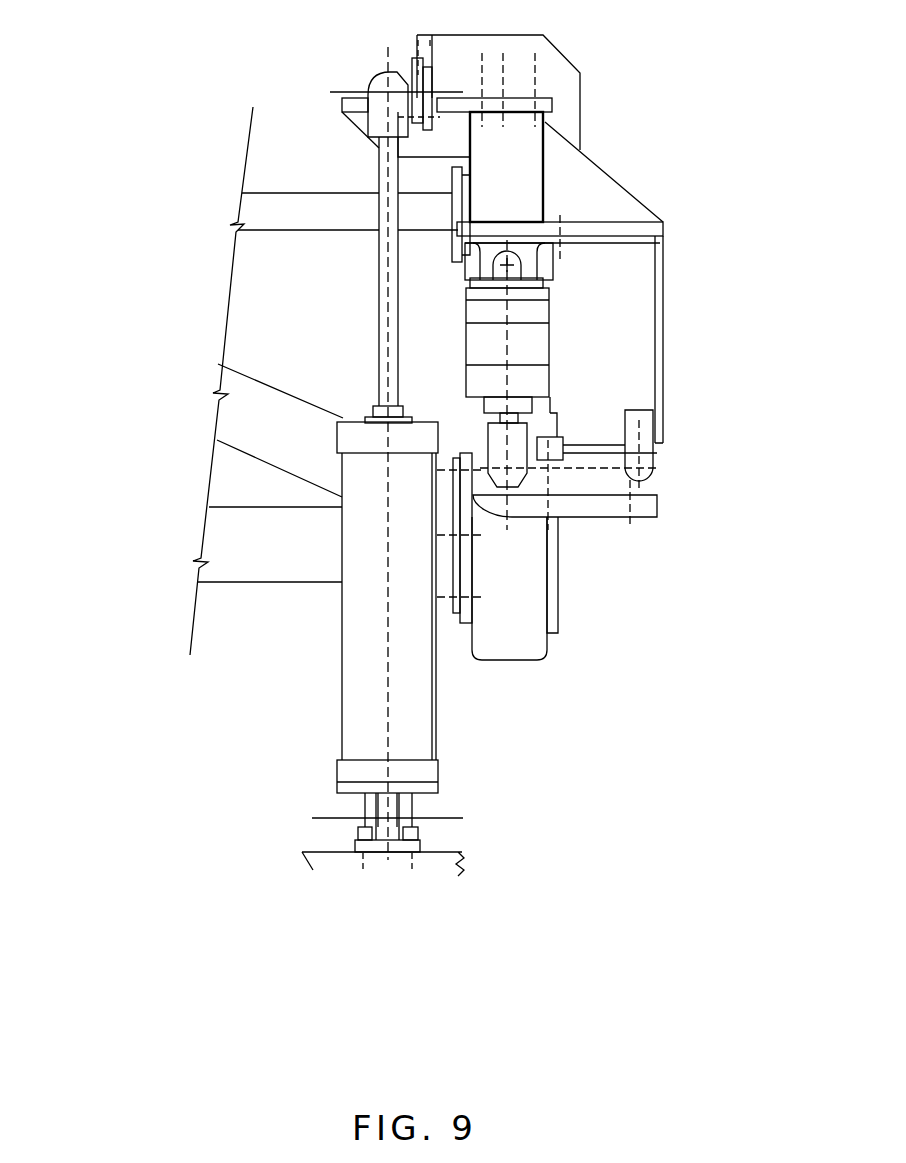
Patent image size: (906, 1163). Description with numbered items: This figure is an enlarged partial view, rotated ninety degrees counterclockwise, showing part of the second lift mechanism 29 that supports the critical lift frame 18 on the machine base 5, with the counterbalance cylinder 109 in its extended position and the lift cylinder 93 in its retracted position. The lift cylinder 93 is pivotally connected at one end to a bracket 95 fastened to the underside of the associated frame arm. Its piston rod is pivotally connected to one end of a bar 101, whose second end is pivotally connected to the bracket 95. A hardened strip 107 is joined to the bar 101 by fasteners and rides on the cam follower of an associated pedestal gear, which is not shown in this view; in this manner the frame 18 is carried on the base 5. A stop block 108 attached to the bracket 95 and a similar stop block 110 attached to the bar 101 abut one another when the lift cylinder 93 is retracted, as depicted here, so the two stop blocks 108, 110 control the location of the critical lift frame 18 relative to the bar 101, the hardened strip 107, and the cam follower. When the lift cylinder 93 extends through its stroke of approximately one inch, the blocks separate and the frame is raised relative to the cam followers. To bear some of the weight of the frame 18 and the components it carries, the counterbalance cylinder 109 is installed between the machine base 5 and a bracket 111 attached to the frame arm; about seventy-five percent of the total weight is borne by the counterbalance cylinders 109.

The bracket 111 is at (587, 197).
The critical lift frame 18 is at (668, 267).
The bracket 95 is at (623, 322).
The stop block 108 is at (557, 449).
The bar 101 is at (650, 487).
The hardened strip 107 is at (648, 507).
The stop block 110 is at (557, 463).
The second lift mechanism 29 is at (590, 517).
The lift cylinder 93 is at (485, 345).
The counterbalance cylinder 109 is at (363, 660).
The base 5 is at (433, 875).